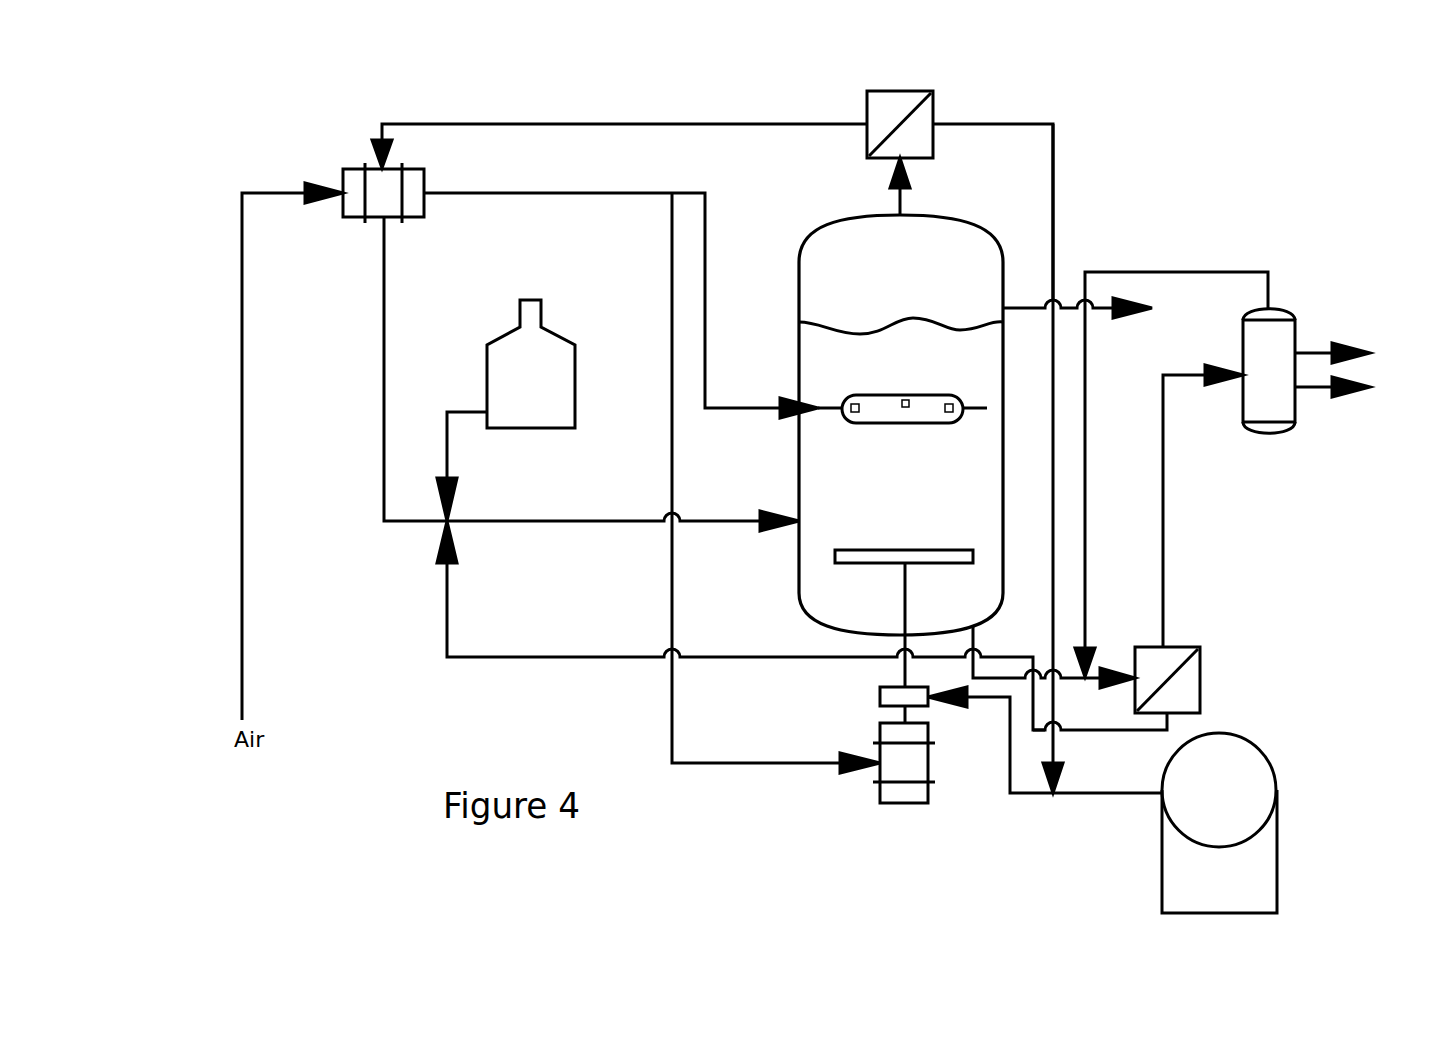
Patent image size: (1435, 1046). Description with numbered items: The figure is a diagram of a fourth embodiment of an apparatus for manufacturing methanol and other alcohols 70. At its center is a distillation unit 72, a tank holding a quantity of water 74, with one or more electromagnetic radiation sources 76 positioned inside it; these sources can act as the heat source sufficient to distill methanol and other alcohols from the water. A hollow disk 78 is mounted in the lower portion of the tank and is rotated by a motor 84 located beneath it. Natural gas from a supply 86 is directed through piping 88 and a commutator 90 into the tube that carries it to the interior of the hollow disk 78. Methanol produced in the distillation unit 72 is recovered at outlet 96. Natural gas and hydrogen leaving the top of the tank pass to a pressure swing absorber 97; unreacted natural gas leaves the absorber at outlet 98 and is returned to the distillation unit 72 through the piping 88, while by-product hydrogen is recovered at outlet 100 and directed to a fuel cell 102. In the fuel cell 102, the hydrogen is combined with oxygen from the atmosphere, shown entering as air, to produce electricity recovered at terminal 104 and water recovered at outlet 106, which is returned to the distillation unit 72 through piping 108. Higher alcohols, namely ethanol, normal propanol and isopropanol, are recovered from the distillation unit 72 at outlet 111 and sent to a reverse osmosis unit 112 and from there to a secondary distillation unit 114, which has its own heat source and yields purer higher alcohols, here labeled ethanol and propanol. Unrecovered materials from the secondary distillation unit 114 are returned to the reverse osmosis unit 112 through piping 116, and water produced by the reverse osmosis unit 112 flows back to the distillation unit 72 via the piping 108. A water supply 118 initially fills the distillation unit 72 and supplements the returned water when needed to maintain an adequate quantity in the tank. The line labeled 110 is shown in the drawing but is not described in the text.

The apparatus for manufacturing methanol and other alcohols 70 is at (1114, 166).
The distillation unit 72 is at (800, 577).
The water 74 is at (978, 360).
The electromagnetic radiation sources 76 is at (880, 424).
The hollow disk 78 is at (948, 535).
The motor 84 is at (905, 805).
The natural gas supply 86 is at (1264, 730).
The piping 88 is at (1097, 794).
The commutator 90 is at (880, 700).
The methanol outlet 96 is at (1028, 282).
The pressure swing absorber 97 is at (895, 90).
The unreacted natural gas outlet 98 is at (1022, 122).
The hydrogen outlet 100 is at (693, 122).
The fuel cell 102 is at (342, 190).
The terminal 104 is at (615, 195).
The water outlet 106 is at (383, 457).
The piping 108 is at (625, 524).
The return line 110 is at (1085, 733).
The higher alcohols outlet 111 is at (975, 633).
The reverse osmosis unit 112 is at (1182, 647).
The secondary distillation unit 114 is at (1283, 308).
The piping 116 is at (1210, 270).
The water supply 118 is at (458, 372).